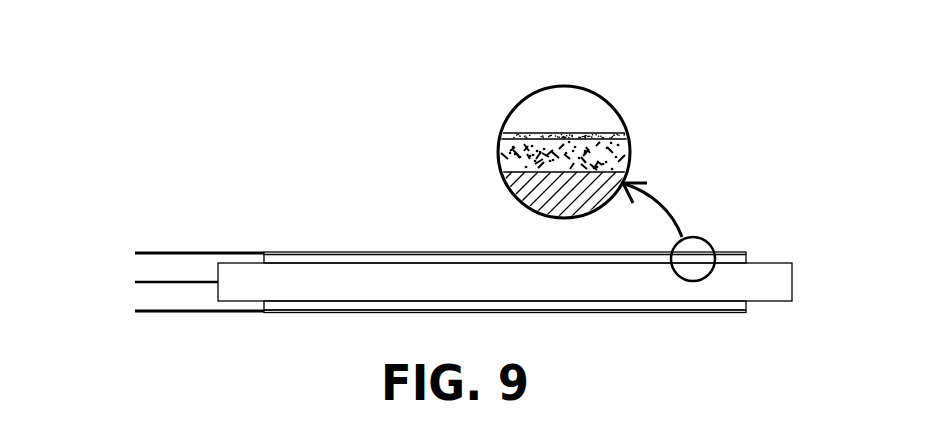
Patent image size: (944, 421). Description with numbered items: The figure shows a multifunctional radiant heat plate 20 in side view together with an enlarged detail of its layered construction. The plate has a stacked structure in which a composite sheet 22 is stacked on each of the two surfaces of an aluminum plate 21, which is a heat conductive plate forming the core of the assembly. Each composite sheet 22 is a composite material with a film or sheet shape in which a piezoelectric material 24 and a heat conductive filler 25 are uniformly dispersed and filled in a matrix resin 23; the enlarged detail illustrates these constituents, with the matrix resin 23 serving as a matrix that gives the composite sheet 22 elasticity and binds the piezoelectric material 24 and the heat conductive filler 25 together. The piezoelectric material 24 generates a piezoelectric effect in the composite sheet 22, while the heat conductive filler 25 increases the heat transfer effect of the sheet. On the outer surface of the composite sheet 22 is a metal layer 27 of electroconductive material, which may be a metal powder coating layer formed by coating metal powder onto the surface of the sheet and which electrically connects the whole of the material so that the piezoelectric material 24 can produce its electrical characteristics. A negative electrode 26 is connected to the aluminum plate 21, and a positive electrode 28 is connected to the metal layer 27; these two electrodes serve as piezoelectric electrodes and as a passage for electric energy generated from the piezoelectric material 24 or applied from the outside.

The multifunctional radiant heat plate 20 is at (457, 209).
The aluminum plate 21 is at (477, 273).
The composite sheet 22 is at (393, 258).
The matrix resin 23 is at (557, 143).
The piezoelectric material 24 is at (575, 148).
The heat conductive filler 25 is at (520, 143).
The negative electrode 26 is at (143, 282).
The metal layer 27 is at (308, 252).
The positive electrode 28 is at (167, 252).